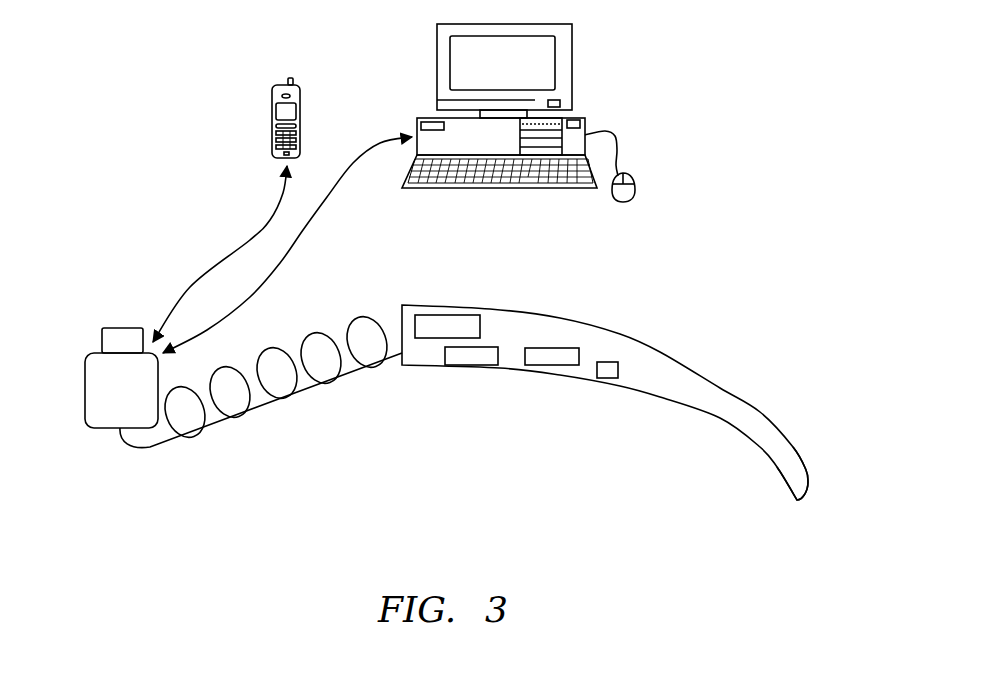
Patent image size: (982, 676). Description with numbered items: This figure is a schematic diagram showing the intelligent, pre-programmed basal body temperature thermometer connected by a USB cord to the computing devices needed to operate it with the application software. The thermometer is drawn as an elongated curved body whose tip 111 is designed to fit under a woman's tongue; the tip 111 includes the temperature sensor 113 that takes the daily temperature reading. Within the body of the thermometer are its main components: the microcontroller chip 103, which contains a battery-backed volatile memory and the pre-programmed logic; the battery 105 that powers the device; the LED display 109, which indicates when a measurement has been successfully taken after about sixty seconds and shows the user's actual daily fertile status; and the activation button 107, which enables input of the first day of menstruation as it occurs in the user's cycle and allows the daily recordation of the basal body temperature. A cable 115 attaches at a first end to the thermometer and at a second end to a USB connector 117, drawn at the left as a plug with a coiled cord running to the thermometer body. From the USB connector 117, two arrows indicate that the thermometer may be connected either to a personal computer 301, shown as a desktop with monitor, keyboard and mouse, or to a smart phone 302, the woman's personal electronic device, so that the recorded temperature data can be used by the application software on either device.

The personal computer 301 is at (573, 72).
The smart phone 302 is at (270, 121).
The USB connector 117 is at (97, 370).
The cable 115 is at (222, 431).
The tip 111 is at (795, 447).
The temperature sensor 113 is at (792, 505).
The microcontroller chip 103 is at (443, 320).
The battery 105 is at (470, 357).
The LED display 109 is at (562, 357).
The activation button 107 is at (608, 377).